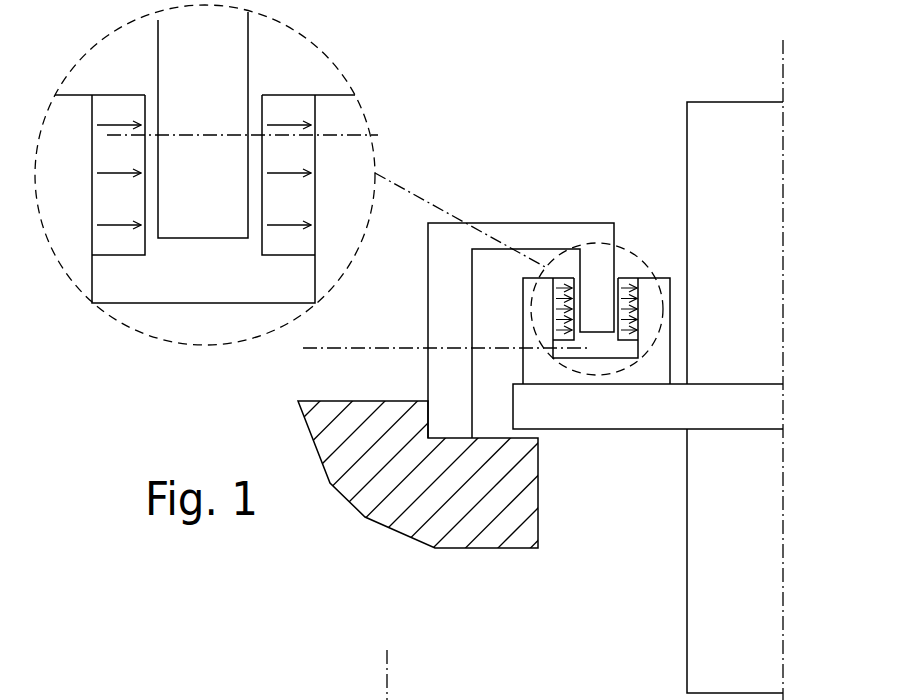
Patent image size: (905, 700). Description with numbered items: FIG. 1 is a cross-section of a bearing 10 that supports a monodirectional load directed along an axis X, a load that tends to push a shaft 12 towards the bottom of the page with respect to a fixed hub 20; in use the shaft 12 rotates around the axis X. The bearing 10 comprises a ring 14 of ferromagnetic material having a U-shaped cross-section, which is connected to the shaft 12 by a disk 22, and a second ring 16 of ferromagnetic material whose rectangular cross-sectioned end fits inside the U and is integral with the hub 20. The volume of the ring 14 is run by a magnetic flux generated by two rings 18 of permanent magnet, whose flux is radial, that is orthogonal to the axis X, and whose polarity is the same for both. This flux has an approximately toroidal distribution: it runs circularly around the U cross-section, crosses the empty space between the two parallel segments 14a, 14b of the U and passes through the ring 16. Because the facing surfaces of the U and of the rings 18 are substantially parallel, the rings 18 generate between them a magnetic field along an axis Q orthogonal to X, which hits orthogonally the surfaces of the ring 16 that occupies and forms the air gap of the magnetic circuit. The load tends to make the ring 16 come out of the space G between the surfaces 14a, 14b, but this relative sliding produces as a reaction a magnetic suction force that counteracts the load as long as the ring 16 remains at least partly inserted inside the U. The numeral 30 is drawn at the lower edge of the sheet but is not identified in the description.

The bearing 10 is at (554, 125).
The shaft 12 is at (697, 148).
The ring 14 is at (662, 361).
The parallel segment of the U 14a is at (523, 320).
The parallel segment of the U 14b is at (672, 290).
The ring 16 is at (610, 314).
The rings of permanent magnet 18 is at (563, 280).
The fixed hub 20 is at (304, 430).
The disk 22 is at (640, 430).
The shaft / lower component 30 is at (166, 699).
The axis X is at (786, 48).
The axis Q is at (175, 133).
The space G is at (597, 352).